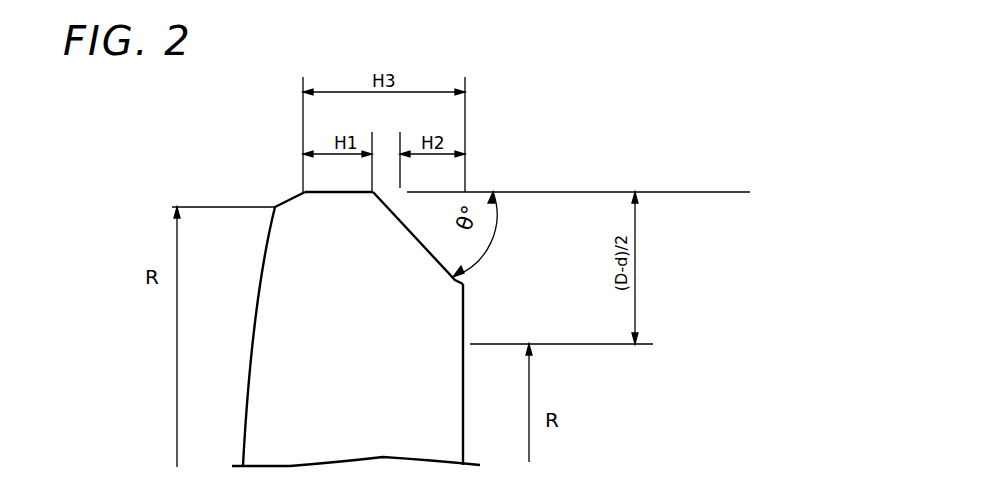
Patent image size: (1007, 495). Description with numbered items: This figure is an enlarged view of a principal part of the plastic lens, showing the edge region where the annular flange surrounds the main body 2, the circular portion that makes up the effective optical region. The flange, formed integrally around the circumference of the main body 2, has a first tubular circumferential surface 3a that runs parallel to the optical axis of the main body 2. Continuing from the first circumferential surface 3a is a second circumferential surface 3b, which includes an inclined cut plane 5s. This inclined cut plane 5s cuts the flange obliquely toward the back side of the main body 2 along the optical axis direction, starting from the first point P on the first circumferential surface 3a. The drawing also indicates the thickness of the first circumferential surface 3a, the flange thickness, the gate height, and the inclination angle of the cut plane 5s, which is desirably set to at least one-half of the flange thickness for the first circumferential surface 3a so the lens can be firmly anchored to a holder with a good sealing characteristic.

The main body 2 is at (463, 373).
The first tubular circumferential surface 3a is at (341, 192).
The second circumferential surface 3b is at (409, 234).
The inclined cut plane 5s is at (481, 255).
The first point P is at (373, 192).